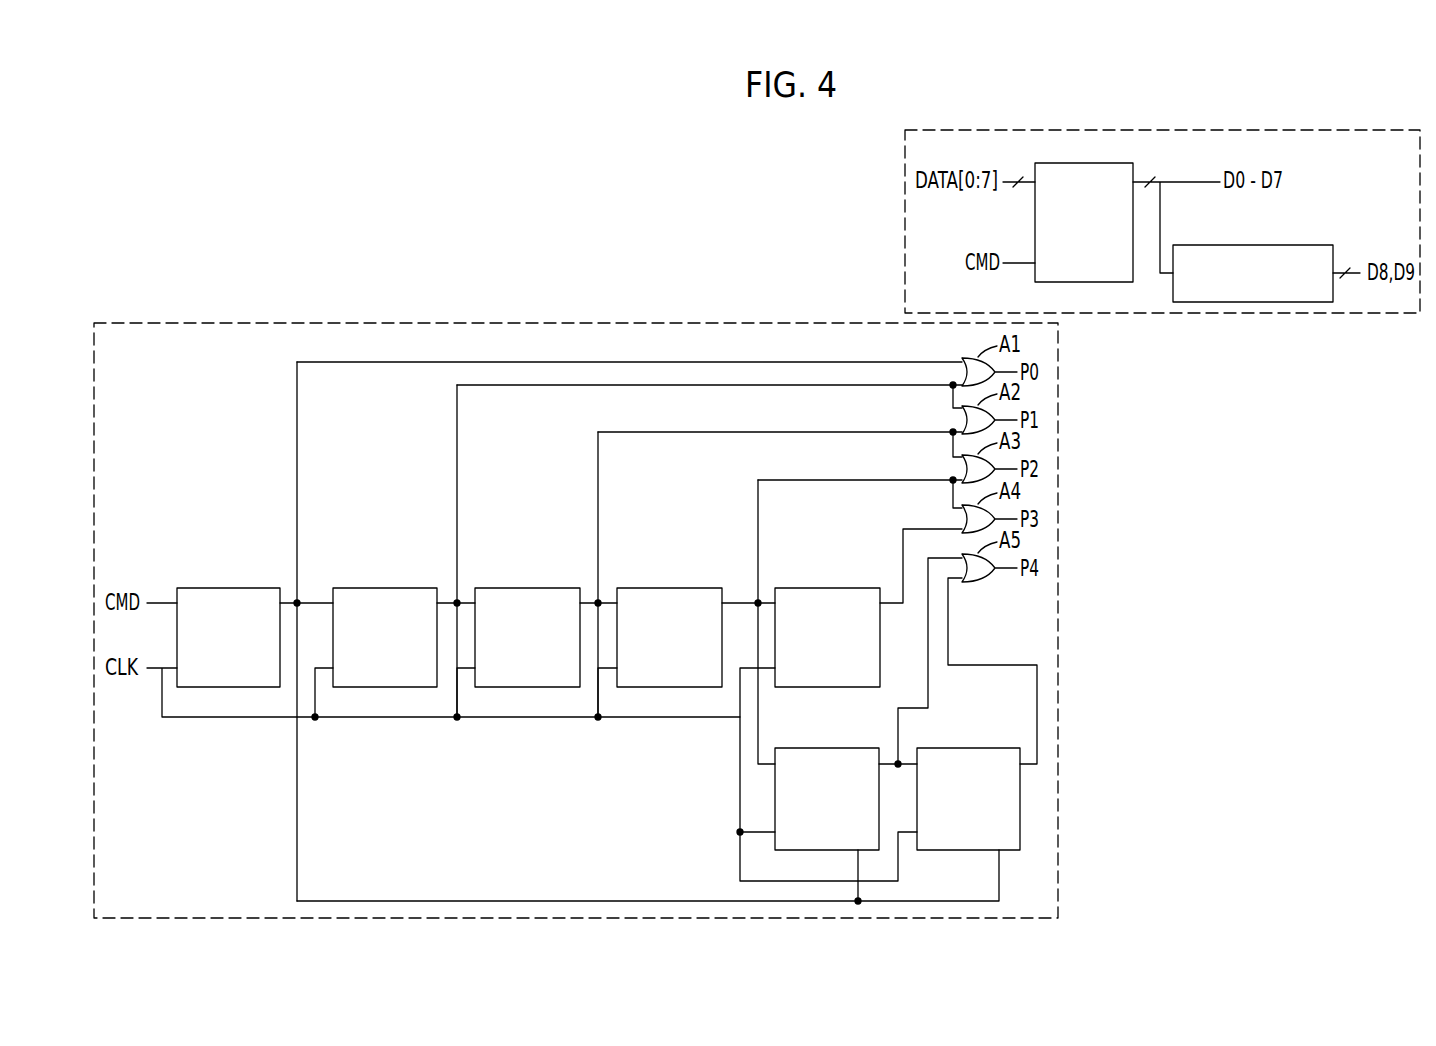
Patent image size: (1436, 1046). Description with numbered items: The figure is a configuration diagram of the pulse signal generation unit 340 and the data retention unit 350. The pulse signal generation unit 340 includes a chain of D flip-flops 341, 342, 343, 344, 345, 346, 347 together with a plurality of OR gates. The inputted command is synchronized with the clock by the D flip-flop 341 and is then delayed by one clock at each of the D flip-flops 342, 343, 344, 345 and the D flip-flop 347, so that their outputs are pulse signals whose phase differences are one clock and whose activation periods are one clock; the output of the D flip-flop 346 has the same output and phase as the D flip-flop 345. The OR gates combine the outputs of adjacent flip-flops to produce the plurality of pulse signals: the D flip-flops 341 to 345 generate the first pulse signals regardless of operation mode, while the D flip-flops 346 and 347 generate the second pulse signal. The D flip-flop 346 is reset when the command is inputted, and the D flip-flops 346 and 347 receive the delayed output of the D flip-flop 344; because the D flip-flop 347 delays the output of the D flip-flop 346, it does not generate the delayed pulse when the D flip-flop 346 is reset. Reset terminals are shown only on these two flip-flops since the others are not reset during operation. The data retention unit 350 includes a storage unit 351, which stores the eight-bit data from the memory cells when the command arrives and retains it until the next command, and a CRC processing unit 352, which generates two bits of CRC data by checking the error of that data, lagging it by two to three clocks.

The pulse signal generation unit 340 is at (1058, 621).
The D flip-flop 341 is at (237, 588).
The D flip-flop 342 is at (393, 588).
The D flip-flop 343 is at (535, 588).
The D flip-flop 344 is at (677, 588).
The D flip-flop 345 is at (835, 588).
The D flip-flop 346 is at (835, 748).
The D flip-flop 347 is at (977, 748).
The data retention unit 350 is at (1372, 130).
The storage unit 351 is at (1092, 163).
The CRC processing unit 352 is at (1287, 245).